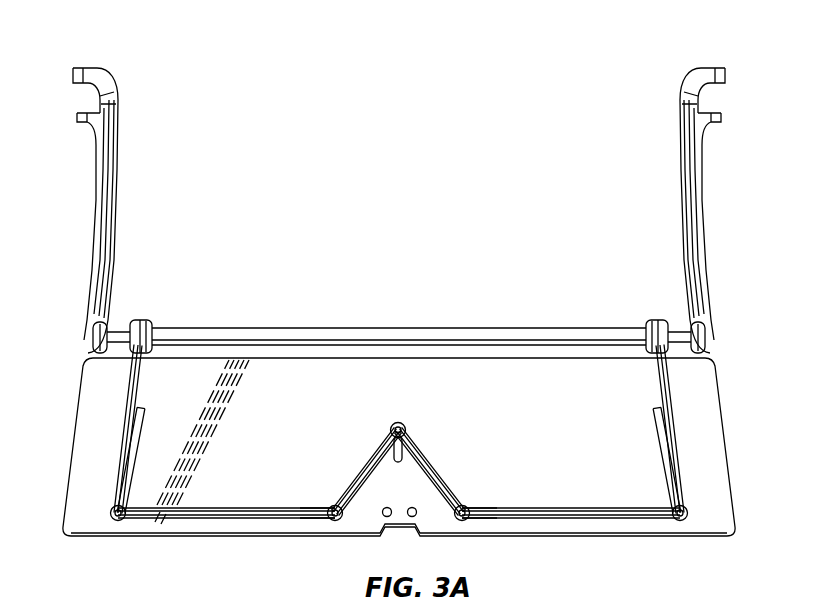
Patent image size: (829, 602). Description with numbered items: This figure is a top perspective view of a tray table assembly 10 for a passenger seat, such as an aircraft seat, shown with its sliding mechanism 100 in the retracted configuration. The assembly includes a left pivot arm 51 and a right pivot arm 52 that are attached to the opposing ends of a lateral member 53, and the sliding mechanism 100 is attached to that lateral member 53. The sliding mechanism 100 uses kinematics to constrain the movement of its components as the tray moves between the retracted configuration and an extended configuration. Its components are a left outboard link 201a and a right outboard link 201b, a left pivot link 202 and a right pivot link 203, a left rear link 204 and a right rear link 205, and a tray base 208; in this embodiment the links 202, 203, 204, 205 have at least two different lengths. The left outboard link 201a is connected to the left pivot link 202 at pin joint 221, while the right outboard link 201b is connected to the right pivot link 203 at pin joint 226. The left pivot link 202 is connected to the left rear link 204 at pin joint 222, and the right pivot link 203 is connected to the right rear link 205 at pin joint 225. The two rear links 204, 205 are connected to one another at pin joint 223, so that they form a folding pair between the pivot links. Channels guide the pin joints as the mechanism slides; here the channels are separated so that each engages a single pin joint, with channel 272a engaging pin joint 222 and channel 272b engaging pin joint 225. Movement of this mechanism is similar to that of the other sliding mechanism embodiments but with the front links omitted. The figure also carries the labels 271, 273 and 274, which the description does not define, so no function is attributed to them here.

The tray table assembly 10 is at (566, 112).
The left pivot arm 51 is at (100, 268).
The right pivot arm 52 is at (705, 268).
The lateral member 53 is at (412, 340).
The sliding mechanism 100 is at (286, 311).
The left outboard link 201a is at (128, 395).
The right outboard link 201b is at (672, 415).
The left pivot link 202 is at (215, 519).
The right pivot link 203 is at (575, 519).
The left rear link 204 is at (352, 480).
The right rear link 205 is at (434, 470).
The tray base 208 is at (562, 405).
The pin joint 221 is at (112, 508).
The pin joint 222 is at (330, 519).
The pin joint 223 is at (403, 423).
The pin joint 225 is at (465, 520).
The pin joint 226 is at (688, 509).
The slot 271 is at (385, 446).
The channel 272a is at (312, 508).
The channel 272b is at (490, 508).
The left arm segment 273 is at (143, 440).
The right arm segment 274 is at (657, 440).